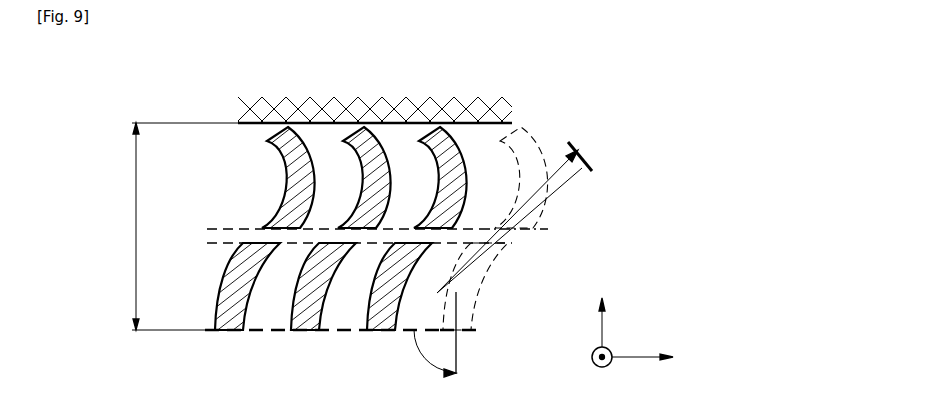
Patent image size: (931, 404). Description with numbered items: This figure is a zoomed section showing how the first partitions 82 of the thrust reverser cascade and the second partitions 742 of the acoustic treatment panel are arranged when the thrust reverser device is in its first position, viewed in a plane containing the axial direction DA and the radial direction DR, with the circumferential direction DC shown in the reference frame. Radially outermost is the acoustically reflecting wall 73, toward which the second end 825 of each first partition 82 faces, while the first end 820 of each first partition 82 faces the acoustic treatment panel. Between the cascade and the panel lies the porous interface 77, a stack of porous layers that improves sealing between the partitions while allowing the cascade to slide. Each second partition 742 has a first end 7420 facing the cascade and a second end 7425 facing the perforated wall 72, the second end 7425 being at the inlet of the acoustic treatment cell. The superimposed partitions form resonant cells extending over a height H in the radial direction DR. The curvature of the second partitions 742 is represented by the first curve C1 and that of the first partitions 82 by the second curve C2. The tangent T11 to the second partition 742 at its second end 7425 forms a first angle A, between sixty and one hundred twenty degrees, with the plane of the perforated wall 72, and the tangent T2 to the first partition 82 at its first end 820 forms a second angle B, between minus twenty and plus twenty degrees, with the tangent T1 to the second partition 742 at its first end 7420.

The acoustically reflecting wall 73 is at (325, 104).
The second end of first partition 825 is at (482, 128).
The first partitions 82 is at (370, 168).
The porous interface 77 is at (238, 228).
The second partitions 742 is at (300, 297).
The perforated wall 72 is at (206, 332).
The first end of first partition 820 is at (548, 229).
The first end of second partition 7420 is at (528, 245).
The second end of second partition 7425 is at (486, 328).
The height of acoustic treatment cells H is at (175, 226).
The first curve C1 is at (461, 291).
The second curve C2 is at (522, 129).
The tangent to second partition at first end T1 is at (563, 168).
The tangent to first partition at first end T2 is at (565, 176).
The second angle B is at (588, 164).
The tangent to second partition at second end T11 is at (459, 352).
The first angle A is at (430, 354).
The radial direction DR is at (600, 313).
The axial direction DA is at (643, 370).
The circumferential direction DC is at (601, 368).